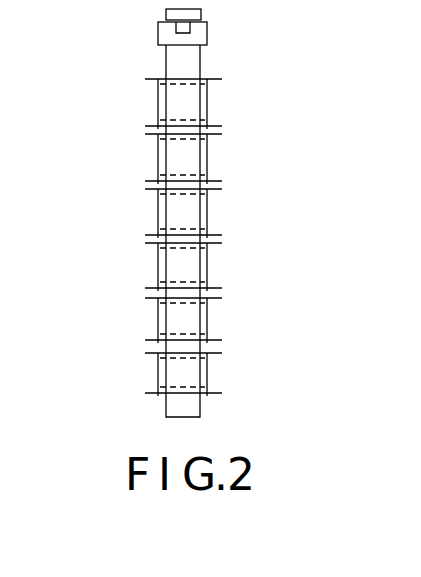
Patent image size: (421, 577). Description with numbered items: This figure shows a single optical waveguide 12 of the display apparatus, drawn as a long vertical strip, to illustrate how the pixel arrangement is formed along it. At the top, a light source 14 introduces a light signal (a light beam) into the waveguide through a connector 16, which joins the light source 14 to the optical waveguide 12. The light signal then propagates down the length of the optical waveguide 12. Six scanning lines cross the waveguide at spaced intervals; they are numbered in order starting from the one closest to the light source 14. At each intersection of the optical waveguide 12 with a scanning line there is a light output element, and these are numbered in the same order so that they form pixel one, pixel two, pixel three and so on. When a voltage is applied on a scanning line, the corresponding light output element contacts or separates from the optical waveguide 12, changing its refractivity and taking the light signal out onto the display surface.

The optical waveguide 12 is at (201, 57).
The light source 14 is at (202, 14).
The connector 16 is at (157, 38).